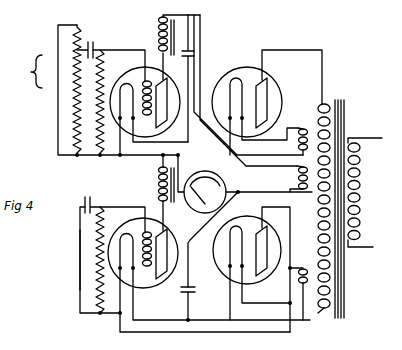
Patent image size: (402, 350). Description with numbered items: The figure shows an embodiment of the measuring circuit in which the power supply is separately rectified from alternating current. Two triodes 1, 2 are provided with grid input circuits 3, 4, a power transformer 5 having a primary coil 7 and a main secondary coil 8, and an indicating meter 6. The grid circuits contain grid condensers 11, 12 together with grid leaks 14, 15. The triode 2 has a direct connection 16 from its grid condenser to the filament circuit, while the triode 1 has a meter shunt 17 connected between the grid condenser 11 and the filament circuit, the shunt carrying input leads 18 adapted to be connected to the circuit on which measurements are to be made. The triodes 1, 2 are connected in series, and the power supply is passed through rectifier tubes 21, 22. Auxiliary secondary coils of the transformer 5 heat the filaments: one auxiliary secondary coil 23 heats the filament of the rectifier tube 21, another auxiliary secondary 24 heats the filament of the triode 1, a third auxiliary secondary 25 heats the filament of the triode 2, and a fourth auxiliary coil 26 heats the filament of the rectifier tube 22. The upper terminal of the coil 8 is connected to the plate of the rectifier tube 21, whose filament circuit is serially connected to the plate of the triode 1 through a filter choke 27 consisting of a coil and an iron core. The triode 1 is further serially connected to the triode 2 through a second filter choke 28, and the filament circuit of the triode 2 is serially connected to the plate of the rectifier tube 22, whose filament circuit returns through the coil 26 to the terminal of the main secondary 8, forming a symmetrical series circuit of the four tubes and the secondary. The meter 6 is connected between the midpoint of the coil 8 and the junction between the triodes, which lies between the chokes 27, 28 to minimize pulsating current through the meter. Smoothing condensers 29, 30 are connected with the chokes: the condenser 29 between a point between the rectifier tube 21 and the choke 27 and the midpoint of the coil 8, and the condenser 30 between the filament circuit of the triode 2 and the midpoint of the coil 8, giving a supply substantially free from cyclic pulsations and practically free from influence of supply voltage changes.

The triode 1 is at (170, 79).
The triode 2 is at (166, 236).
The grid input circuit 3 is at (90, 41).
The grid input circuit 4 is at (85, 260).
The power transformer 5 is at (358, 99).
The indicating meter 6 is at (203, 214).
The primary coil 7 is at (361, 194).
The main secondary coil 8 is at (314, 222).
The grid condenser 11 is at (96, 46).
The grid condenser 12 is at (94, 200).
The grid leak 14 is at (103, 225).
The grid leak 15 is at (103, 68).
The direct connection 16 is at (79, 272).
The meter shunt 17 is at (72, 72).
The input leads 18 is at (93, 90).
The rectifier tube 21 is at (276, 92).
The rectifier tube 22 is at (270, 227).
The auxiliary secondary coil 23 is at (298, 131).
The auxiliary secondary 24 is at (296, 179).
The auxiliary secondary 25 is at (299, 270).
The auxiliary coil 26 is at (319, 316).
The filter choke 27 is at (156, 20).
The filter choke 28 is at (157, 187).
The smoothing condenser 29 is at (195, 52).
The smoothing condenser 30 is at (192, 286).